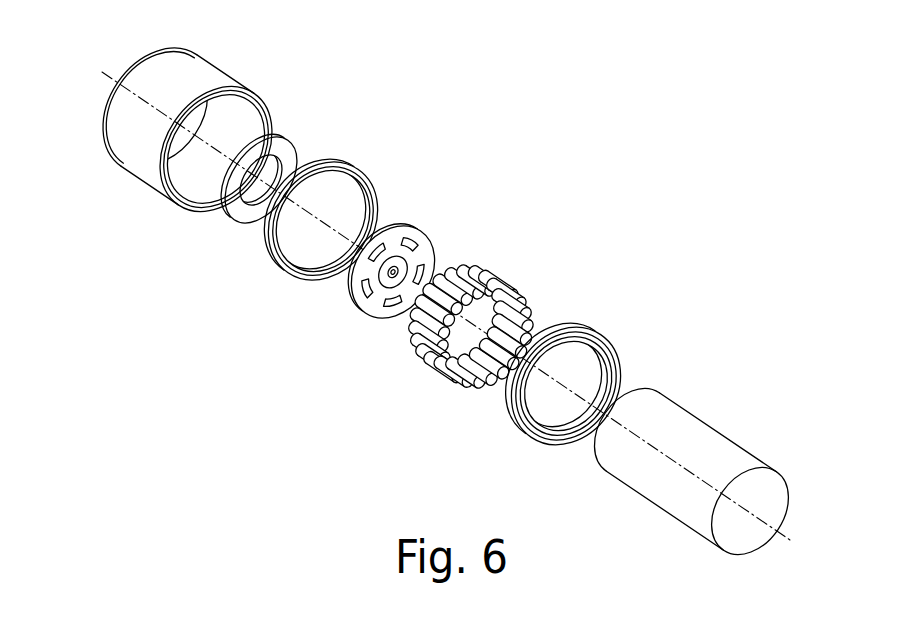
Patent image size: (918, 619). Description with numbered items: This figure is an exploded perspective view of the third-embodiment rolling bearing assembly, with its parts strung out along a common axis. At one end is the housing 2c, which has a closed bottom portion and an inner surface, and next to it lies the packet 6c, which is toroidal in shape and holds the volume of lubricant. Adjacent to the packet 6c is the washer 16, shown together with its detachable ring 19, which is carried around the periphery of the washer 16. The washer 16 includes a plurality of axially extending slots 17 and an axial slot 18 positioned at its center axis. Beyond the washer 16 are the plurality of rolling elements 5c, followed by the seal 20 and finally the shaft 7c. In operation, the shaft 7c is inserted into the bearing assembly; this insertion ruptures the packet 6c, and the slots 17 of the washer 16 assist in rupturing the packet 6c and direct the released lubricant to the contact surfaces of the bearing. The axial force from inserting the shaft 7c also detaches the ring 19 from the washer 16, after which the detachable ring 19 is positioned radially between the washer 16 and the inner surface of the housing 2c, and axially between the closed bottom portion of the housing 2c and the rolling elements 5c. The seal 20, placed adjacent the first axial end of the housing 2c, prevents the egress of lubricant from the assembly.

The housing 2c is at (130, 168).
The packet 6c is at (247, 210).
The detachable ring 19 is at (300, 273).
The washer 16 is at (427, 228).
The axially extending slots 17 is at (383, 235).
The axial slot 18 is at (391, 274).
The rolling elements 5c is at (472, 258).
The seal 20 is at (603, 327).
The shaft 7c is at (695, 447).